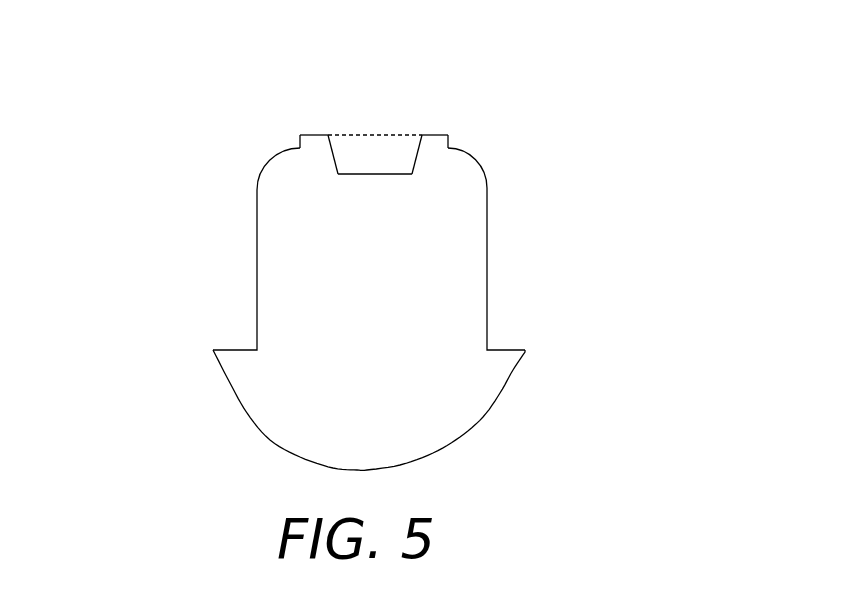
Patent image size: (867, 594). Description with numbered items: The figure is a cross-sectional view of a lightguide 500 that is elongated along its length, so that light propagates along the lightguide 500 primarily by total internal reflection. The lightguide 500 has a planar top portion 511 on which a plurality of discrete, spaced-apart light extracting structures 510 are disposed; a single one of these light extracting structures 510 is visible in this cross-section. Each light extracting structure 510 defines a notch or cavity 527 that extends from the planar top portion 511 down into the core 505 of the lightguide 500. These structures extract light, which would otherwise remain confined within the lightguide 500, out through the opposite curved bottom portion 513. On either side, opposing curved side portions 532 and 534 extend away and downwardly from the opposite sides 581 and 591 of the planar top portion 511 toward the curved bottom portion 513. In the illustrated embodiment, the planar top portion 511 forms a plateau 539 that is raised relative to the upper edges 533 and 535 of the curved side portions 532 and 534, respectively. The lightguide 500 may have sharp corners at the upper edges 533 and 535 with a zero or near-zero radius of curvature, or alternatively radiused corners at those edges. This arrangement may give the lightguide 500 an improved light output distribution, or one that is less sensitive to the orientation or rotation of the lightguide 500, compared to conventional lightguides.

The lightguide 500 is at (160, 69).
The core 505 is at (467, 248).
The light extracting structure 510 is at (391, 144).
The planar top portion 511 is at (311, 135).
The curved bottom portion 513 is at (453, 442).
The notch or cavity 527 is at (353, 145).
The curved side portion 532 is at (263, 163).
The upper edge 533 is at (298, 148).
The curved side portion 534 is at (480, 155).
The upper edge 535 is at (449, 148).
The plateau 539 is at (435, 135).
The side of the planar top portion 581 is at (300, 135).
The side of the planar top portion 591 is at (450, 135).